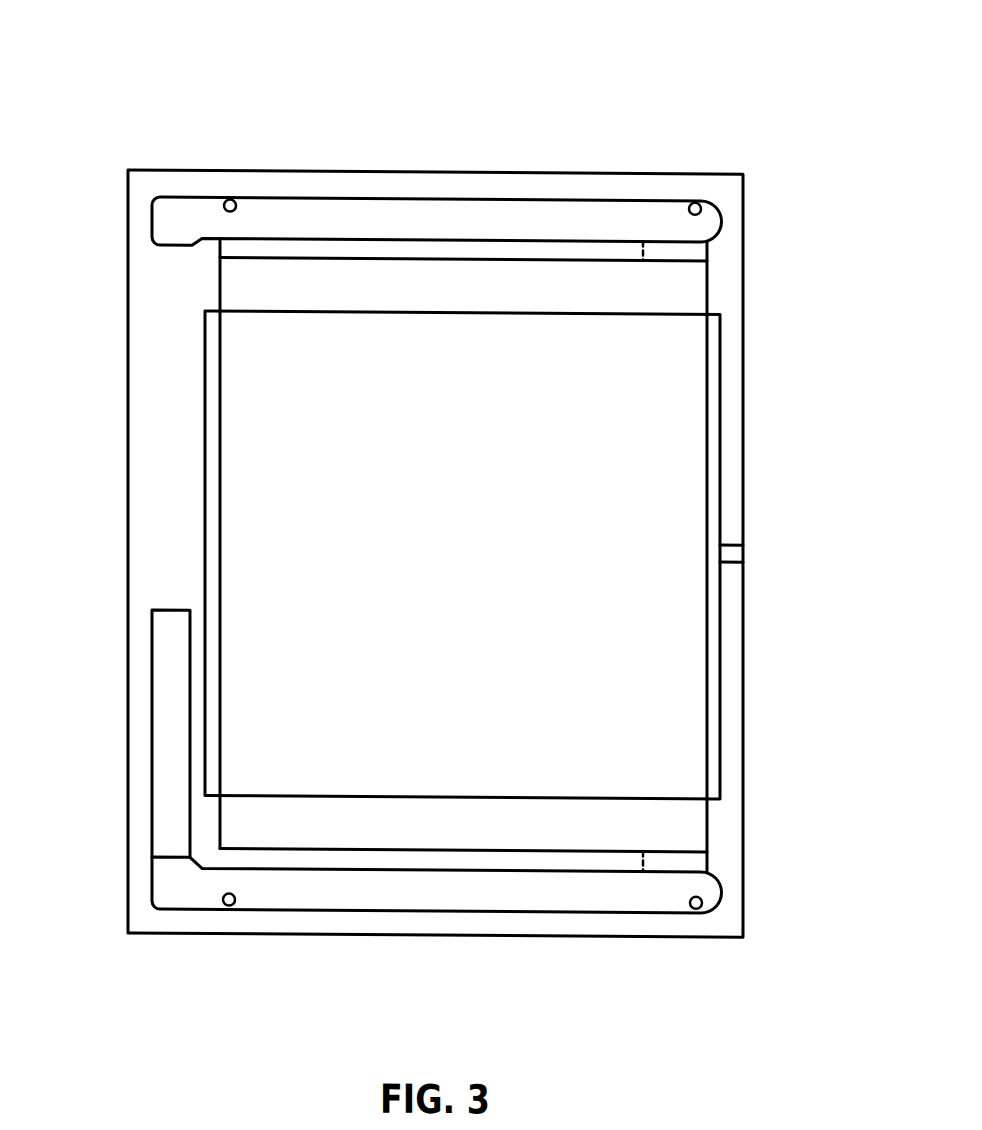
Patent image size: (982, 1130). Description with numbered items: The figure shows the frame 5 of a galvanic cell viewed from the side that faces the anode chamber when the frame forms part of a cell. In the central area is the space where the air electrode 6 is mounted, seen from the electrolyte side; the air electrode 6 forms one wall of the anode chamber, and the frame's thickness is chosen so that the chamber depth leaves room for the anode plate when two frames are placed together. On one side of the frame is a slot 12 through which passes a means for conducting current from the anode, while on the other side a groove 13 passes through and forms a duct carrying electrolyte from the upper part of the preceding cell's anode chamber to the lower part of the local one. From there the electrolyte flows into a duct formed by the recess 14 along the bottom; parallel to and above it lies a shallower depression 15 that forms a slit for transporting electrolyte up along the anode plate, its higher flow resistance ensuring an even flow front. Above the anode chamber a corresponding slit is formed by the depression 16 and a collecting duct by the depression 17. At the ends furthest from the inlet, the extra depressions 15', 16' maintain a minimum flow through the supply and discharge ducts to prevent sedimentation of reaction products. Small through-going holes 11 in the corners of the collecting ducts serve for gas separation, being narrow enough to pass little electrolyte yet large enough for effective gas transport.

The frame 5 is at (183, 124).
The air electrode 6 is at (670, 467).
The through-going holes 11 is at (694, 198).
The slot 12 is at (733, 548).
The groove 13 is at (165, 701).
The recess 14 is at (494, 890).
The depression 15 is at (431, 930).
The extra depression 15' is at (667, 934).
The depression 16 is at (431, 474).
The extra depression 16' is at (736, 547).
The depression 17 is at (508, 214).